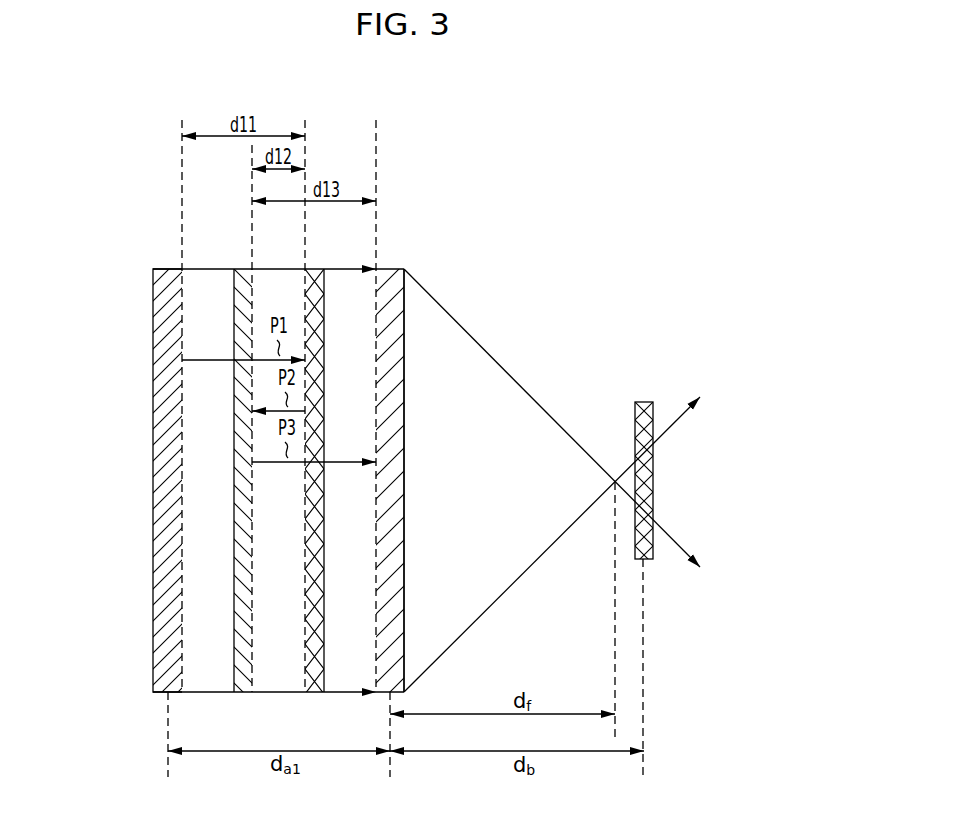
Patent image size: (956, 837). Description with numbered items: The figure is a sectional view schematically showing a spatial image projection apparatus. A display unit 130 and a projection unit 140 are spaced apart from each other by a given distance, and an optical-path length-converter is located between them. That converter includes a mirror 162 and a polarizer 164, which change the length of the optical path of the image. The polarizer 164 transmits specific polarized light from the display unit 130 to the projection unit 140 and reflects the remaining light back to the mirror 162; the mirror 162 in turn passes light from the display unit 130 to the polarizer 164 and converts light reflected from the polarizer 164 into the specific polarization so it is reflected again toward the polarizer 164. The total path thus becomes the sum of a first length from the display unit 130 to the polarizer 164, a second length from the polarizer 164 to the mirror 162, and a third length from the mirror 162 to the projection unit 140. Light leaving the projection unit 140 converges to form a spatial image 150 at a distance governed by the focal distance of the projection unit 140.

The display unit 130 is at (153, 269).
The projection unit 140 is at (403, 269).
The spatial image 150 is at (648, 402).
The mirror 162 is at (252, 617).
The polarizer 164 is at (324, 617).